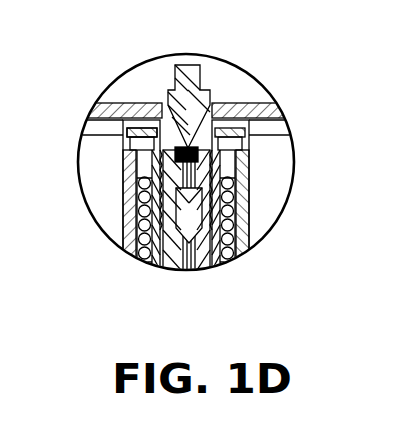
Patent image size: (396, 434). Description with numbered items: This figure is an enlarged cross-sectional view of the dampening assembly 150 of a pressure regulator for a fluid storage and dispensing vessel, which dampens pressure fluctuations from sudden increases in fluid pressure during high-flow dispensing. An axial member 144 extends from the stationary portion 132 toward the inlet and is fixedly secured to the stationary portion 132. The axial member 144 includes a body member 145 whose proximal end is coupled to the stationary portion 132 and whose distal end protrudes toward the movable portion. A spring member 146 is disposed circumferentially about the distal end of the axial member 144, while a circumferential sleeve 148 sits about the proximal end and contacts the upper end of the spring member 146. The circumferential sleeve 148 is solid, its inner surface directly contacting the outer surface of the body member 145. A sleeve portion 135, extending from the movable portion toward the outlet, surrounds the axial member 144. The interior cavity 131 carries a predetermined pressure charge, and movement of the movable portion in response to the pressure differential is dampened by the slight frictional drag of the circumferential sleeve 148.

The interior cavity 131 is at (283, 166).
The stationary portion 132 is at (188, 110).
The sleeve portion 135 is at (229, 200).
The axial member 144 is at (189, 113).
The body member 145 is at (142, 132).
The spring member 146 is at (228, 218).
The circumferential sleeve 148 is at (142, 200).
The dampening assembly 150 is at (186, 215).